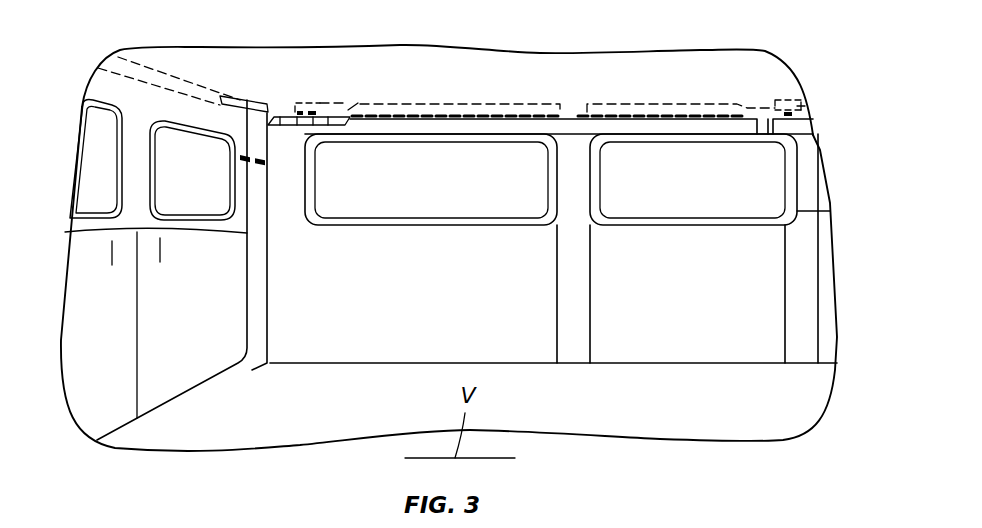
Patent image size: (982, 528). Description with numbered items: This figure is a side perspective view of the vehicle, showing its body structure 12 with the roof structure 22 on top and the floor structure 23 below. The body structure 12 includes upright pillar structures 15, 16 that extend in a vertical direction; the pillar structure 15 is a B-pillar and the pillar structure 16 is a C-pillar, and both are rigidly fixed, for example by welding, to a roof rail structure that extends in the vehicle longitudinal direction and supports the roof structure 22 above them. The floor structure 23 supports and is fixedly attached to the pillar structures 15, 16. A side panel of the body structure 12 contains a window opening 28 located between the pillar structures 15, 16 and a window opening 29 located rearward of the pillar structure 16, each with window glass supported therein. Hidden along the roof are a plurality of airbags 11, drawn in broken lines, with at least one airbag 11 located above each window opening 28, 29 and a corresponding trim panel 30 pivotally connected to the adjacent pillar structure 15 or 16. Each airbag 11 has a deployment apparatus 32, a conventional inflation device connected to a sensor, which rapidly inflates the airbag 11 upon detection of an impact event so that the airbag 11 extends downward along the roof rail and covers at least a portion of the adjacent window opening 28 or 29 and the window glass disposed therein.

The airbag 11 is at (190, 85).
The body structure 12 is at (810, 77).
The pillar structure 15 is at (810, 270).
The pillar structure 16 is at (577, 312).
The roof structure 22 is at (677, 73).
The floor structure 23 is at (670, 412).
The window opening 28 is at (674, 212).
The window opening 29 is at (497, 212).
The trim panel 30 is at (577, 183).
The deployment apparatus 32 is at (258, 100).